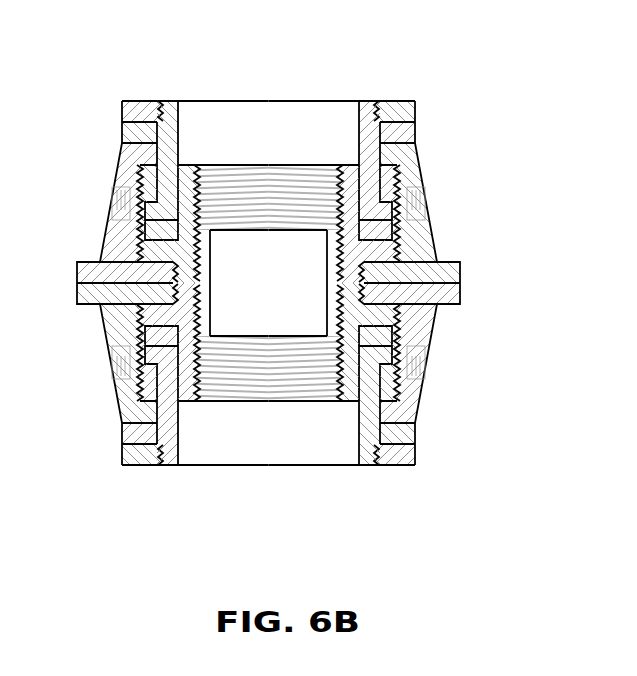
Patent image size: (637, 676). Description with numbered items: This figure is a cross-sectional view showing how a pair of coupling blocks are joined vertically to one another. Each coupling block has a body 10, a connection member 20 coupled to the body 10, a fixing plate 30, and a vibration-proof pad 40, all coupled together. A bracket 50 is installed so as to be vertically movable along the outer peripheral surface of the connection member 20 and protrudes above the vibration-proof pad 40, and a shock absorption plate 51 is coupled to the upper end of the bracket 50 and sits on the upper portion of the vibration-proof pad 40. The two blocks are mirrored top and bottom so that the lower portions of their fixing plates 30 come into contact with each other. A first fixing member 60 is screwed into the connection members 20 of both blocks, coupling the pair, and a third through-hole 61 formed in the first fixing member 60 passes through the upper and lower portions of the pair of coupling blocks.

The body 10 is at (403, 165).
The connection member 20 is at (190, 187).
The fixing plate 30 is at (450, 273).
The vibration-proof pad 40 is at (383, 132).
The bracket 50 is at (172, 132).
The shock absorption plate 51 is at (142, 105).
The first fixing member 60 is at (205, 253).
The third through-hole 61 is at (252, 252).